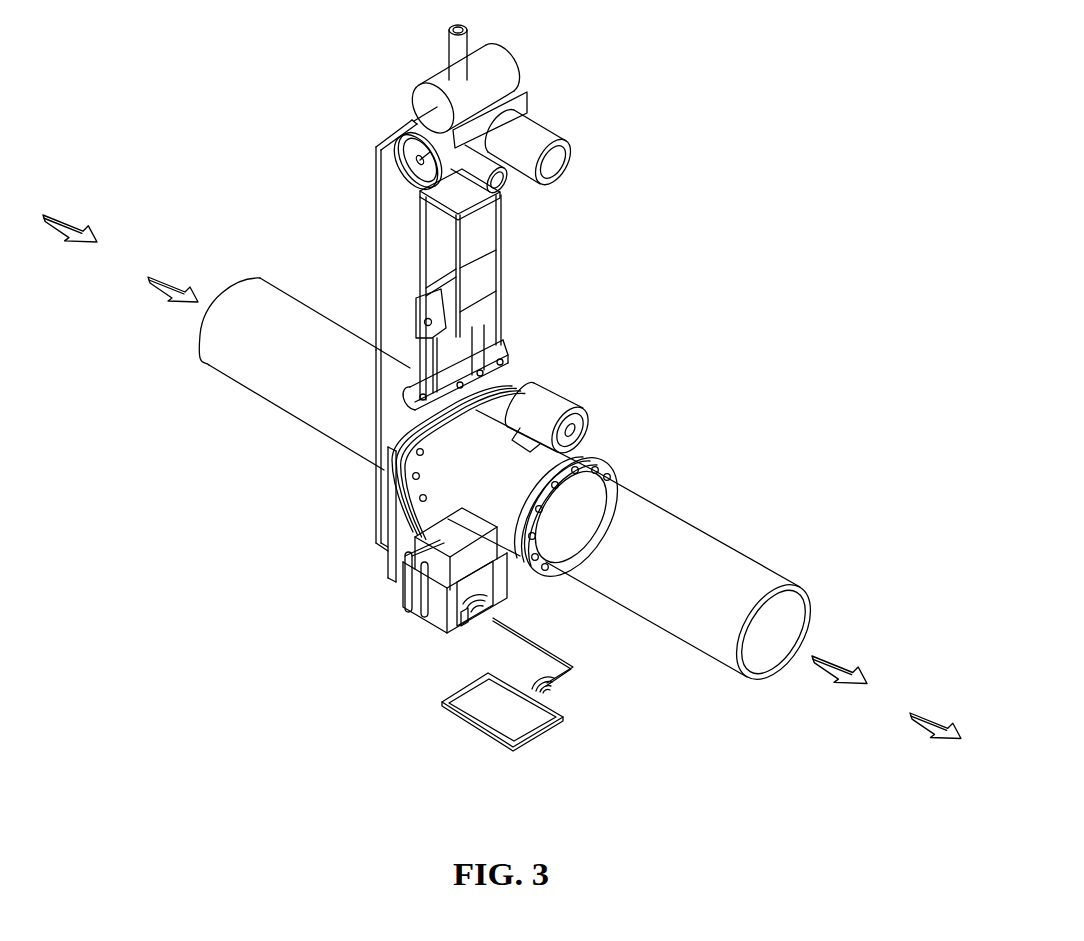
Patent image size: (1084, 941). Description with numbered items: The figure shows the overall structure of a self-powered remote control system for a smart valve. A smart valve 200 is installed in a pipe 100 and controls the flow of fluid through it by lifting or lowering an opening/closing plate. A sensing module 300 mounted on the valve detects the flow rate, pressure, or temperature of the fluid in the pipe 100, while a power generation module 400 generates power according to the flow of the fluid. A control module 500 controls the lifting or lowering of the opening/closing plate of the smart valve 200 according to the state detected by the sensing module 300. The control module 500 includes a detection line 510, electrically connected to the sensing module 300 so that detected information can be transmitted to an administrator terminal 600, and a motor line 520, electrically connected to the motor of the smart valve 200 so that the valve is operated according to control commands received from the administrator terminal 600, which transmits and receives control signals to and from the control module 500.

The pipe 100 is at (697, 548).
The smart valve 200 is at (512, 259).
The sensing module 300 is at (574, 385).
The power generation module 400 is at (393, 570).
The control module 500 is at (436, 629).
The detection line 510 is at (378, 510).
The motor line 520 is at (376, 192).
The administrator terminal 600 is at (464, 735).